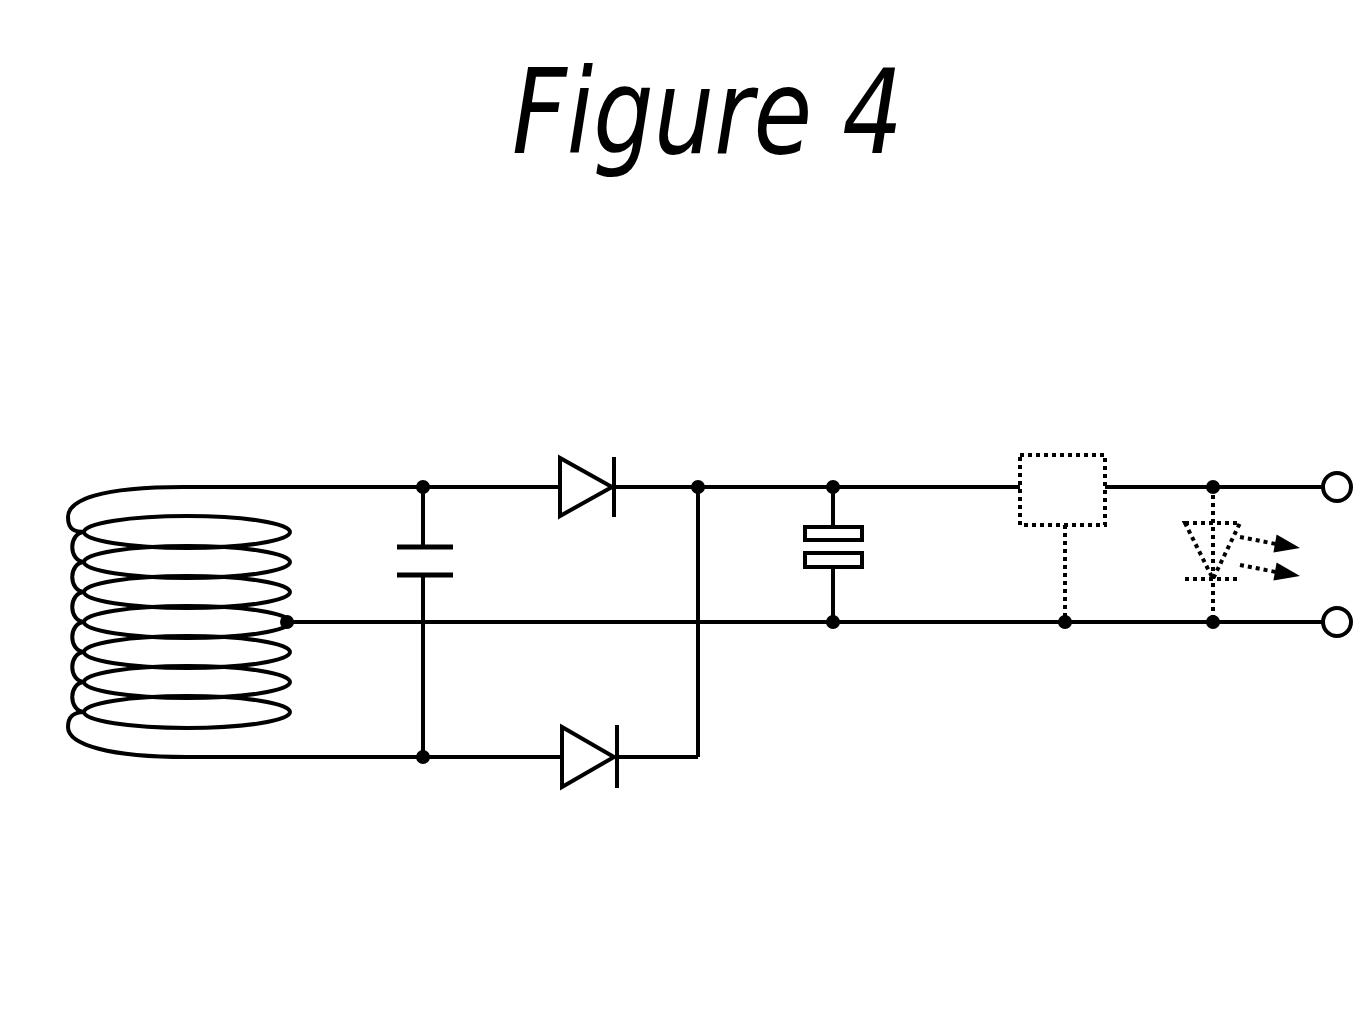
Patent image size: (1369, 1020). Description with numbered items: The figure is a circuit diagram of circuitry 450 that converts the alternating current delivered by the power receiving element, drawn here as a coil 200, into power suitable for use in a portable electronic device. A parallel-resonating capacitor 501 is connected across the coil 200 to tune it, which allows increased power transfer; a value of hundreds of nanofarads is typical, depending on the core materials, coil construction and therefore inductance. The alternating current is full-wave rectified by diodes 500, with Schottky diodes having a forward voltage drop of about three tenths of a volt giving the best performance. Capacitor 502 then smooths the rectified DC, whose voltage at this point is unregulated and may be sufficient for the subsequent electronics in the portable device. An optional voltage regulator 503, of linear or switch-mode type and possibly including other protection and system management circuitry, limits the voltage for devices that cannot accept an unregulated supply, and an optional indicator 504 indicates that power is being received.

The circuitry 450 is at (407, 318).
The coil 200 is at (179, 567).
The diodes 500 is at (600, 582).
The parallel-resonating capacitor 501 is at (485, 622).
The capacitor 502 is at (891, 554).
The voltage regulator 503 is at (1062, 478).
The indicator 504 is at (1234, 478).